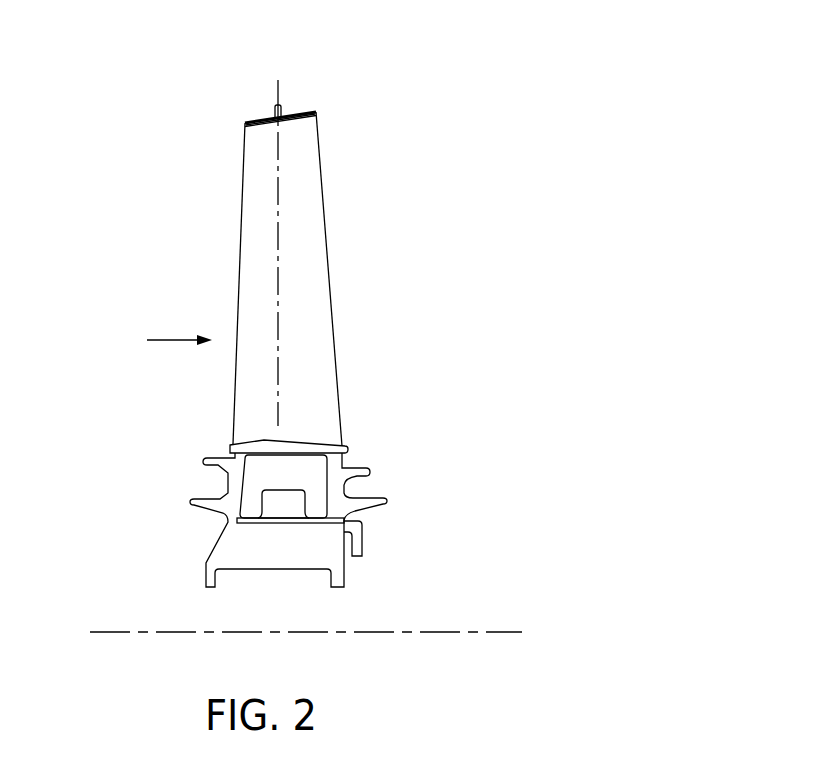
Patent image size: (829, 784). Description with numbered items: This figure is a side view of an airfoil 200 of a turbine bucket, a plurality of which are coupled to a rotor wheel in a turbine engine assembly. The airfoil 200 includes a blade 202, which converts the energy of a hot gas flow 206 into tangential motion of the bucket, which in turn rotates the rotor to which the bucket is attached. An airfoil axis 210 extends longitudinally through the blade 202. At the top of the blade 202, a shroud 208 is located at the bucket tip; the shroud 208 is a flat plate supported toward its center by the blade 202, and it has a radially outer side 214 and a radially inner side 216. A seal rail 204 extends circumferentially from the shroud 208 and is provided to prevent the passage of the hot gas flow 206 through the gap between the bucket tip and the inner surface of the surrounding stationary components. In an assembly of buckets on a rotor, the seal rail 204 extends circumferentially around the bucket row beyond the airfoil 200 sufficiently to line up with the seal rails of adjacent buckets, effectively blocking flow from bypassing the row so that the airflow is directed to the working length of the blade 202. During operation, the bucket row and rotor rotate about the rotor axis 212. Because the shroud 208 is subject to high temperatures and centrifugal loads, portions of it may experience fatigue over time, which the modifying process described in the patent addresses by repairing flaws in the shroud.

The airfoil 200 is at (405, 55).
The blade 202 is at (331, 294).
The seal rail 204 is at (284, 108).
The hot gas flow 206 is at (180, 342).
The shroud 208 is at (242, 111).
The airfoil axis 210 is at (278, 223).
The rotor axis 212 is at (435, 630).
The radially outer side 214 is at (272, 118).
The radially inner side 216 is at (268, 131).